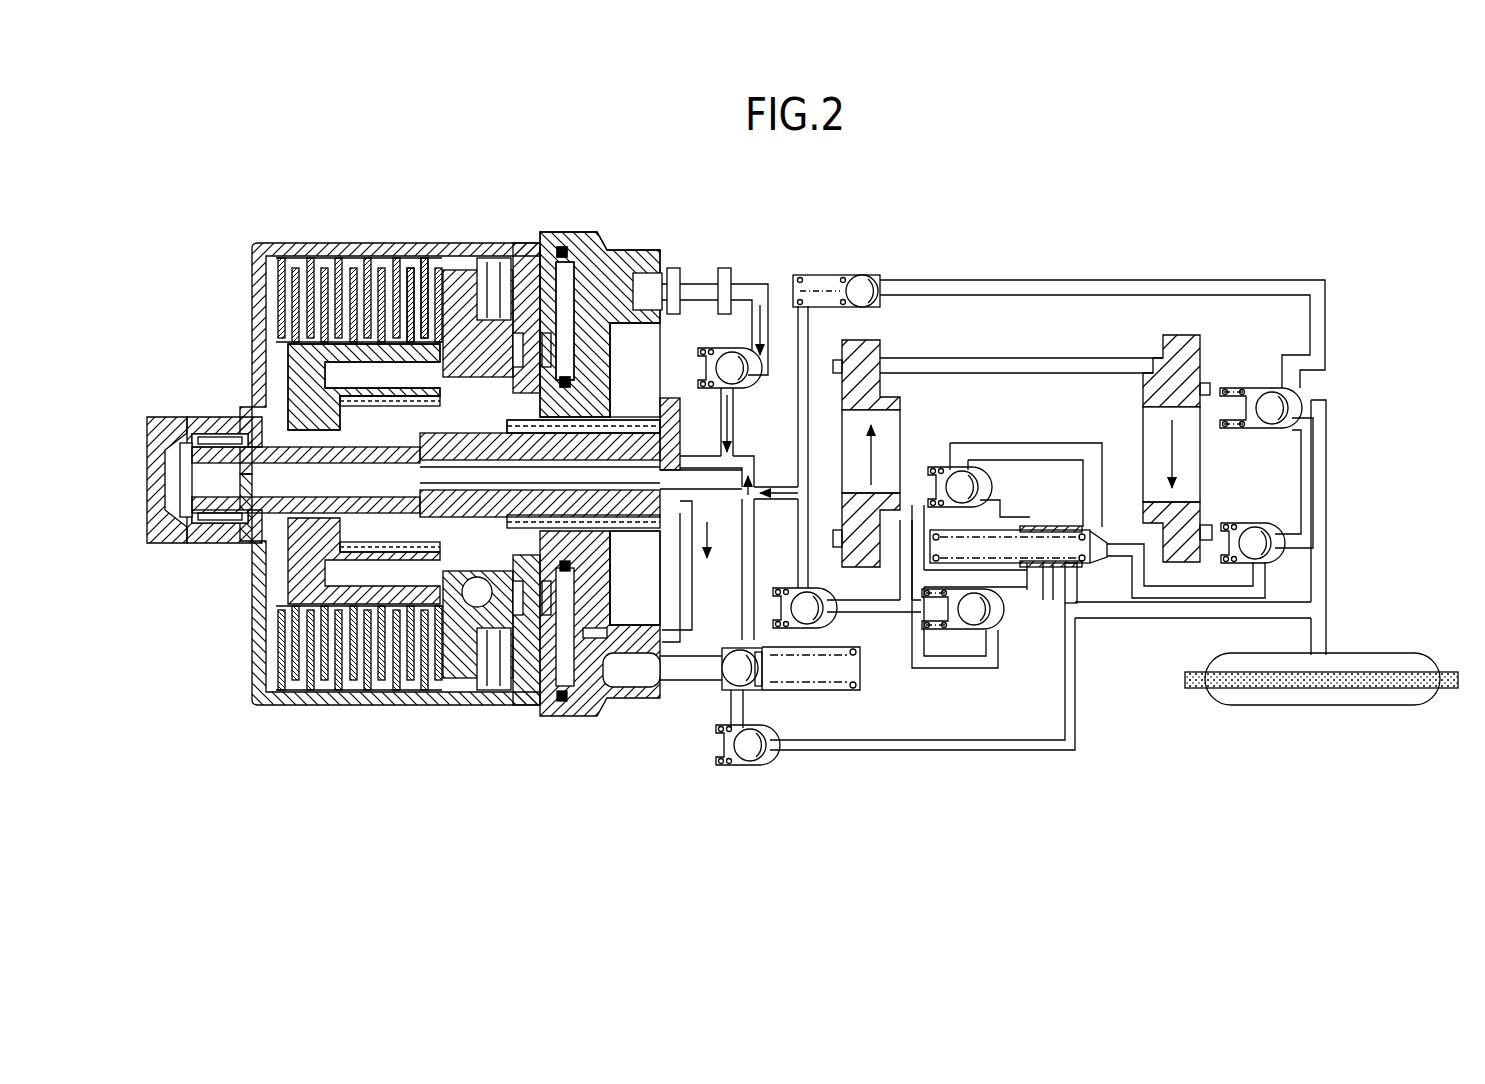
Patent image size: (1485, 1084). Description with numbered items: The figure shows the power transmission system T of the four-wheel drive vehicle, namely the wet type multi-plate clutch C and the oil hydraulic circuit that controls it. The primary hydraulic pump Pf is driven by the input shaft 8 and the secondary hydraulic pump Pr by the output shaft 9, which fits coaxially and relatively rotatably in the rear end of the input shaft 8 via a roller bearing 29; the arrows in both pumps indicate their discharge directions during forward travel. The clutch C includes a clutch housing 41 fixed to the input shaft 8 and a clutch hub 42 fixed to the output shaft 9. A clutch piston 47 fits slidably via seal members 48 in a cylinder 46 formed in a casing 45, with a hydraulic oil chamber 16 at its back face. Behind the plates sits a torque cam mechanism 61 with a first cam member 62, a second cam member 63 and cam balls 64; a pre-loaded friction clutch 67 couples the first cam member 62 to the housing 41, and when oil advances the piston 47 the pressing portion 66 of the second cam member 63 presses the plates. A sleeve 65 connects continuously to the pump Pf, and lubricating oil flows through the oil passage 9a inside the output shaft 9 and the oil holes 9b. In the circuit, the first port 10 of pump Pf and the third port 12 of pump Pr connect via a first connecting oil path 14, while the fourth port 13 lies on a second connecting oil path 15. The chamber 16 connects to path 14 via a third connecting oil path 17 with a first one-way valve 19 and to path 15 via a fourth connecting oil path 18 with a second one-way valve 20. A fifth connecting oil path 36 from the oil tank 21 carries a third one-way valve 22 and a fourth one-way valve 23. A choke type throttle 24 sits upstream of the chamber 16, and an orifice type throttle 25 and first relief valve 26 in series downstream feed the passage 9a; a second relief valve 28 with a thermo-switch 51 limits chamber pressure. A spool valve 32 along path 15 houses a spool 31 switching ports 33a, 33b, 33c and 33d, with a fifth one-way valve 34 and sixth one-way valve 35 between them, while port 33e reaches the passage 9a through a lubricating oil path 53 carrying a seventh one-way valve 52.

The input shaft 8 is at (203, 545).
The output shaft 9 is at (663, 410).
The oil passage 9a is at (455, 460).
The oil holes 9b is at (345, 458).
The first port 10 is at (882, 365).
The third port 12 is at (1158, 350).
The fourth port 13 is at (1150, 532).
The first connecting oil path 14 is at (1003, 358).
The second connecting oil path 15 is at (945, 668).
The hydraulic oil chamber 16 is at (588, 608).
The third connecting oil path 17 is at (1085, 280).
The fourth connecting oil path 18 is at (887, 618).
The first one-way valve 19 is at (858, 278).
The second one-way valve 20 is at (800, 592).
The oil tank 21 is at (1385, 658).
The third one-way valve 22 is at (1270, 428).
The fourth one-way valve 23 is at (1268, 550).
The choke type throttle 24 is at (662, 618).
The orifice type throttle 25 is at (710, 268).
The first relief valve 26 is at (738, 384).
The second relief valve 28 is at (757, 685).
The roller bearing 29 is at (205, 418).
The spool 31 is at (1065, 530).
The spool valve 32 is at (1033, 525).
The port 33a is at (925, 578).
The port 33b is at (1005, 527).
The port 33c is at (1090, 528).
The port 33d is at (1045, 590).
The port 33e is at (1072, 603).
The fifth one-way valve 34 is at (982, 633).
The sixth one-way valve 35 is at (966, 470).
The fifth connecting oil path 36 is at (1328, 462).
The clutch housing 41 is at (240, 300).
The clutch hub 42 is at (398, 420).
The casing 45 is at (628, 252).
The cylinder 46 is at (598, 235).
The clutch piston 47 is at (558, 718).
The seal members 48 is at (566, 245).
The thermo-switch 51 is at (628, 690).
The seventh one-way valve 52 is at (750, 763).
The lubricating oil path 53 is at (935, 752).
The torque cam mechanism 61 is at (460, 540).
The first cam member 62 is at (490, 576).
The second cam member 63 is at (450, 580).
The cam balls 64 is at (448, 680).
The sleeve 65 is at (630, 425).
The pressing portion 66 is at (437, 268).
The friction clutch 67 is at (490, 242).
The multi-plate clutch C is at (322, 243).
The power transmission system T is at (980, 255).
The primary hydraulic pump Pf is at (905, 437).
The secondary hydraulic pump Pr is at (1215, 458).